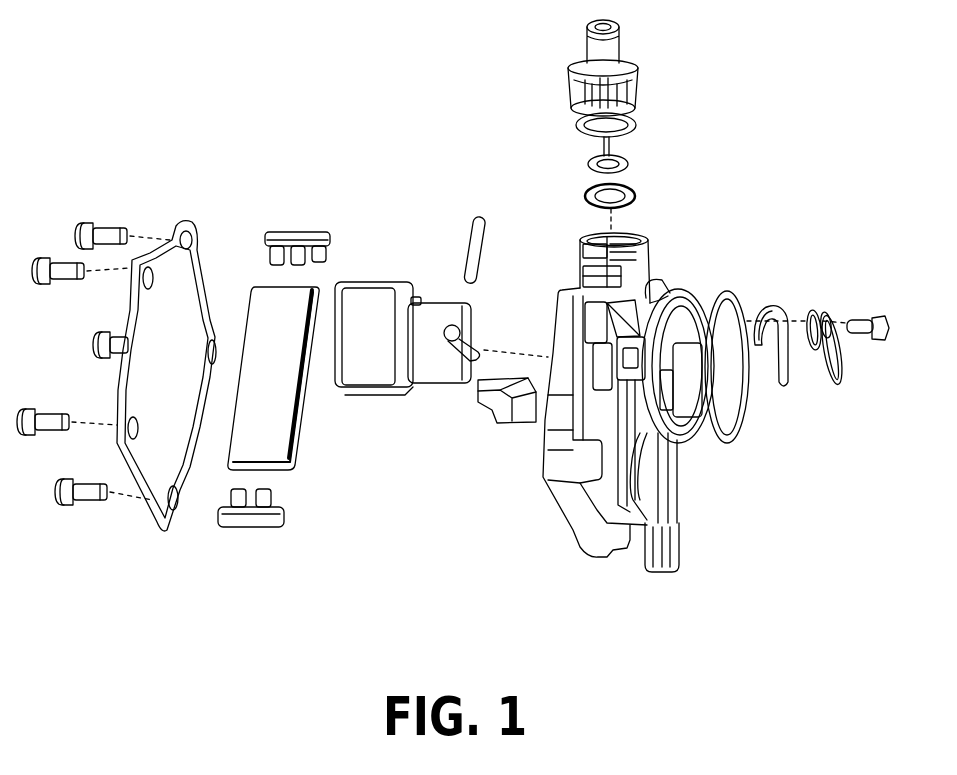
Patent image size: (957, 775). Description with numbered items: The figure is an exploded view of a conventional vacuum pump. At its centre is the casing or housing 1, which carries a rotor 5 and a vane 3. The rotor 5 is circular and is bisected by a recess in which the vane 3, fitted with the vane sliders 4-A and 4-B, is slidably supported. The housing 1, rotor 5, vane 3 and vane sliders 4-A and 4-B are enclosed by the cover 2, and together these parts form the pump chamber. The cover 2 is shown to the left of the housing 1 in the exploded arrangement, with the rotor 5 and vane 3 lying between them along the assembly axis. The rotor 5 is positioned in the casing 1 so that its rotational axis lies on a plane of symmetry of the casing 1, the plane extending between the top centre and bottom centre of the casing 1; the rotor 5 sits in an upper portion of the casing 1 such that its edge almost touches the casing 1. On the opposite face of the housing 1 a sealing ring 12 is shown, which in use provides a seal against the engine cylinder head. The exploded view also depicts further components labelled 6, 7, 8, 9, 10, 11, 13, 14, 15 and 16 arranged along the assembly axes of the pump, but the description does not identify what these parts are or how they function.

The casing or housing 1 is at (679, 478).
The cover 2 is at (168, 532).
The vane 3 is at (303, 426).
The vane slider 4-A is at (299, 232).
The vane slider 4-B is at (284, 512).
The rotor 5 is at (437, 305).
The connector 6 is at (477, 402).
The pin 7 is at (478, 218).
The valve cap 8 is at (572, 85).
The valve disc 9 is at (589, 165).
The O-ring 10 is at (637, 192).
The washer 11 is at (640, 124).
The sealing ring 12 is at (731, 292).
The retaining clip 13 is at (790, 366).
The spring clip 14 is at (823, 310).
The screws 15 is at (103, 222).
The pin 16 is at (876, 320).